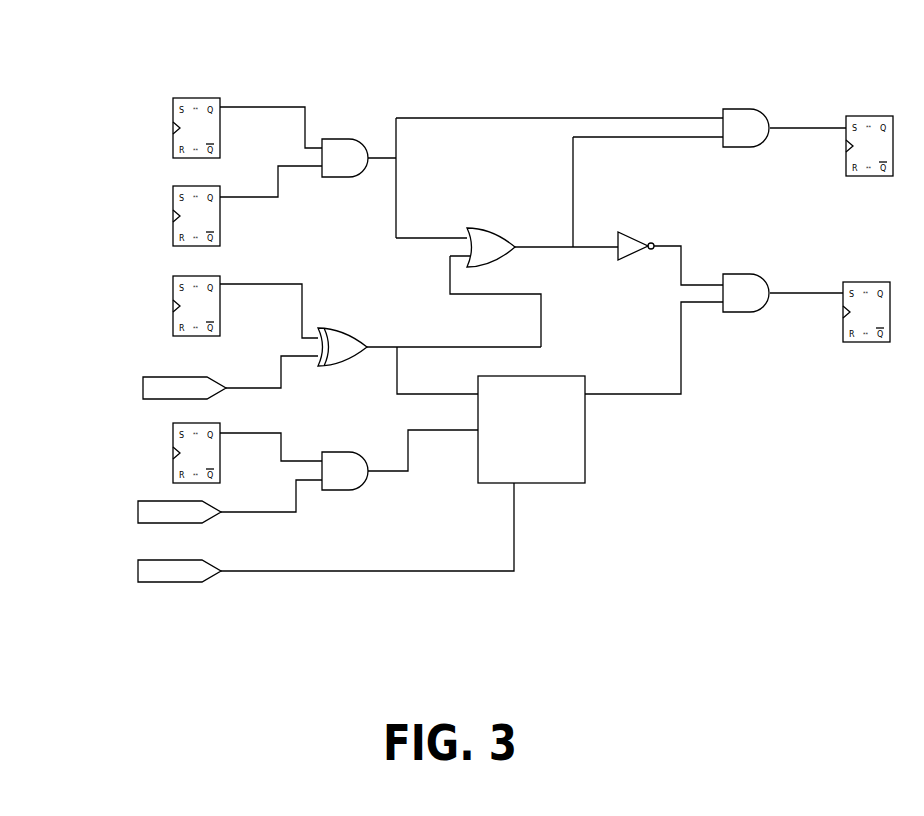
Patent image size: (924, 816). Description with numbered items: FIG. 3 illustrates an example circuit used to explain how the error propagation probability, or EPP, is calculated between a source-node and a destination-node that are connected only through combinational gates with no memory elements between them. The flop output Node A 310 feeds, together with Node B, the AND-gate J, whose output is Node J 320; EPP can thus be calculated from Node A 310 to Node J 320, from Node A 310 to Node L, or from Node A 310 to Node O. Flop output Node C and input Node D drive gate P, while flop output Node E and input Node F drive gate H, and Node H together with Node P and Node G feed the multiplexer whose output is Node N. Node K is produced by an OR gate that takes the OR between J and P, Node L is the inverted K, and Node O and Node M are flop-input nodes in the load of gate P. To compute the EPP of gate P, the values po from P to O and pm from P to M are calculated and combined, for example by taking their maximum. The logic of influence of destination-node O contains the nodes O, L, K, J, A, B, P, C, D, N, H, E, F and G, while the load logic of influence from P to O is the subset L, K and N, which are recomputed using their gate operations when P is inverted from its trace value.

The Node A 310 is at (152, 121).
The Node J 320 is at (345, 122).
The Node A is at (247, 115).
The Node B is at (247, 204).
The Node C is at (245, 293).
The Node D is at (230, 375).
The Node E is at (247, 442).
The Node F is at (230, 501).
The Node G is at (326, 532).
The Node H is at (400, 460).
The AND-gate J is at (522, 177).
The Node K is at (586, 242).
The Node L is at (670, 251).
The Node M is at (808, 128).
The Node N is at (600, 392).
The Node O is at (806, 299).
The gate P is at (429, 351).